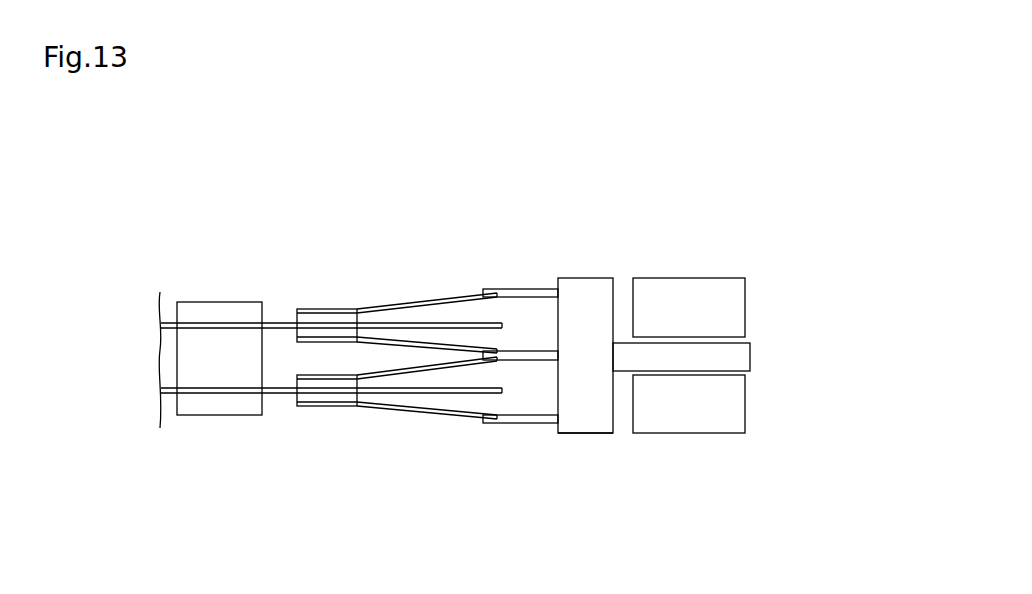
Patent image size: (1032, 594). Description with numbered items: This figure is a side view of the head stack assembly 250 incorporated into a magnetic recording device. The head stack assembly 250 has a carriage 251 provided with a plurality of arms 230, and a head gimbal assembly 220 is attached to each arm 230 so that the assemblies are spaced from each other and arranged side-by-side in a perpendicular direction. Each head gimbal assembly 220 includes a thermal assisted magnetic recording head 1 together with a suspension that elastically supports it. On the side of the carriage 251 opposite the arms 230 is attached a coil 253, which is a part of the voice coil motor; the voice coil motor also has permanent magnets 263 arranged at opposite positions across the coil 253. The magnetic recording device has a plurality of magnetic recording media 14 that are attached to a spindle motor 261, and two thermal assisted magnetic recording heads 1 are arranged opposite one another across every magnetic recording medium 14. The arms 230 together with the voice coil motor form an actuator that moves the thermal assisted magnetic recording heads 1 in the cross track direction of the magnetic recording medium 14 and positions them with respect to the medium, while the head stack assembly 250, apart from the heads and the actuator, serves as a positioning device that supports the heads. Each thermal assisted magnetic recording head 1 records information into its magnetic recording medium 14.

The thermal assisted magnetic recording head 1 is at (289, 312).
The magnetic recording medium 14 is at (275, 317).
The head gimbal assembly 220 is at (415, 302).
The arm 230 is at (498, 288).
The head stack assembly 250 is at (585, 255).
The carriage 251 is at (588, 427).
The coil 253 is at (738, 357).
The spindle motor 261 is at (198, 305).
The permanent magnets 263 is at (684, 278).